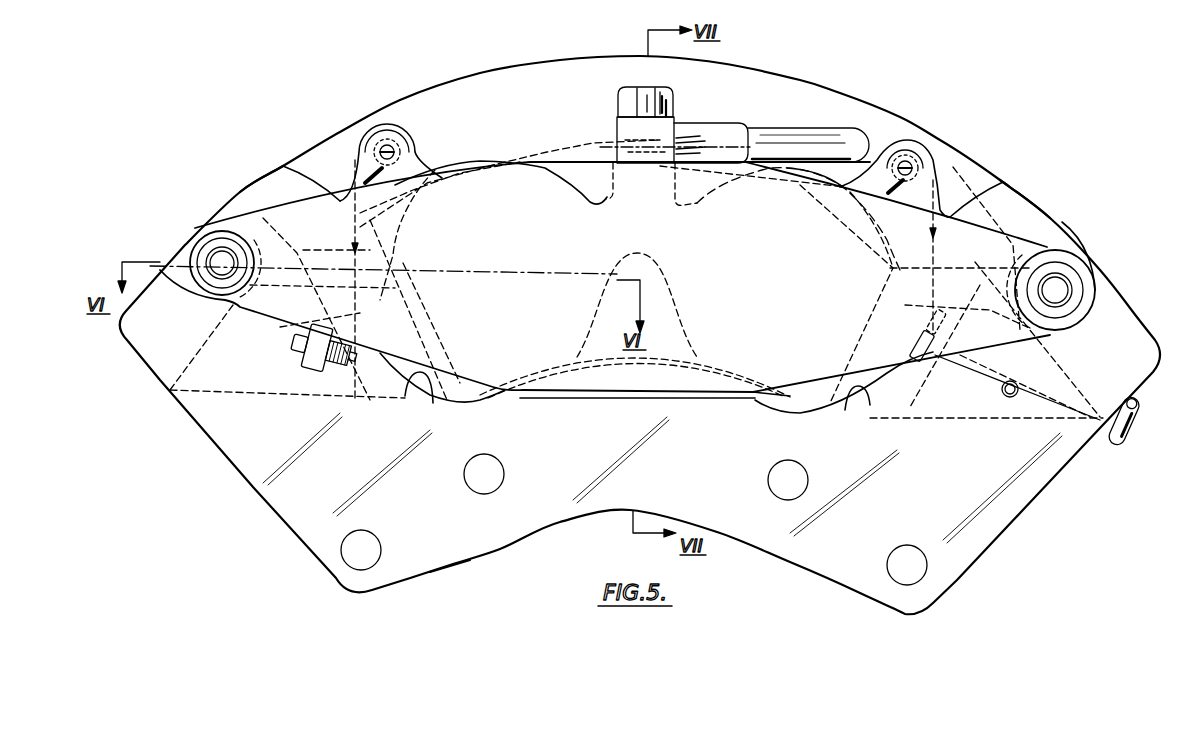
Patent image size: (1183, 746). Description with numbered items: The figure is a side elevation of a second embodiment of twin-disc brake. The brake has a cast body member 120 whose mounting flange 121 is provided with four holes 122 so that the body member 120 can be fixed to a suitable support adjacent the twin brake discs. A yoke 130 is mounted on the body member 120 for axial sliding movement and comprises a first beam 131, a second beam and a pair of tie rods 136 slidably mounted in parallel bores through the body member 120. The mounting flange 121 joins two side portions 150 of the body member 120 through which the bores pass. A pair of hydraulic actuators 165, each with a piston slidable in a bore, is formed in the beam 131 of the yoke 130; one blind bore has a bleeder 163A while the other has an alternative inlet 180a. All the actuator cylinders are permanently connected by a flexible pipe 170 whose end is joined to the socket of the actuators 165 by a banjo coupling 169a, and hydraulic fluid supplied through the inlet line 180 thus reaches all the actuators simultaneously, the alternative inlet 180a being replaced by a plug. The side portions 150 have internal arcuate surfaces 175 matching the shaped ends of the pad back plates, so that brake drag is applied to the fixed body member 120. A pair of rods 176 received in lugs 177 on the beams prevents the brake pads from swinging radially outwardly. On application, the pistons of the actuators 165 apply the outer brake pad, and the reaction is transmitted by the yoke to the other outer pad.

The cast body member 120 is at (253, 493).
The mounting flange 121 is at (498, 556).
The holes 122 is at (366, 563).
The yoke 130 is at (1002, 228).
The first beam 131 is at (601, 162).
The tie rods 136 is at (211, 263).
The side portions 150 is at (266, 178).
The bleeder 163A is at (330, 360).
The hydraulic actuators 165 is at (530, 242).
The banjo coupling 169a is at (682, 125).
The flexible pipe 170 is at (788, 128).
The internal arcuate surfaces 175 is at (418, 396).
The rods 176 is at (397, 153).
The lugs 177 is at (350, 165).
The inlet line 180 is at (1138, 422).
The alternative inlet 180a is at (938, 364).